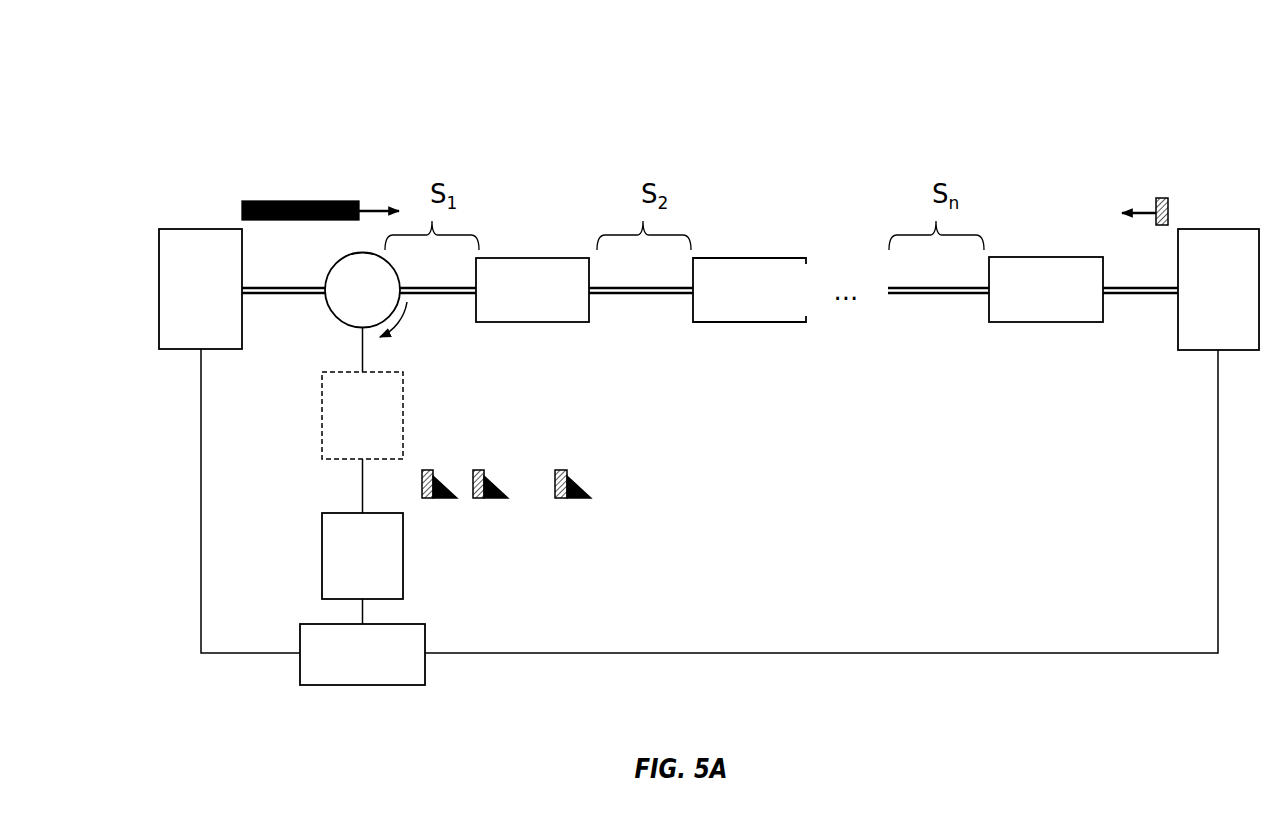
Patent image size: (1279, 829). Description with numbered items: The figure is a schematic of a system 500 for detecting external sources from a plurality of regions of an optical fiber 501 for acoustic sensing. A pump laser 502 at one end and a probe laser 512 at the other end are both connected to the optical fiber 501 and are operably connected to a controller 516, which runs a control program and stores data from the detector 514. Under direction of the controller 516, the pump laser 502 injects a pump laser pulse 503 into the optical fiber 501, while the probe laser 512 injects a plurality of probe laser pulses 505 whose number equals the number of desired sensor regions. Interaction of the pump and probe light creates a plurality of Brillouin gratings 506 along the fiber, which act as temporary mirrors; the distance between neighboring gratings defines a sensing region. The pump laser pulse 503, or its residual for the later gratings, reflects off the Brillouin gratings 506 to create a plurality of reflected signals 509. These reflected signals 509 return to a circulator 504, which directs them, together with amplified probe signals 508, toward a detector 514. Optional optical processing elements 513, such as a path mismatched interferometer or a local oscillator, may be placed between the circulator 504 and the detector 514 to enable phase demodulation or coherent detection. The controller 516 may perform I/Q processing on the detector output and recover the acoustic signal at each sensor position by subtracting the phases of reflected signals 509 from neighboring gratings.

The system 500 is at (123, 66).
The optical fiber 501 is at (295, 303).
The pump laser 502 is at (200, 289).
The pump laser pulse 503 is at (298, 195).
The circulator 504 is at (366, 295).
The probe laser pulses 505 is at (1163, 190).
The Brillouin gratings 506 is at (789, 289).
The amplified probe signals 508 is at (562, 504).
The reflected signals 509 is at (602, 448).
The probe laser 512 is at (1218, 289).
The optical processing elements 513 is at (362, 415).
The detector 514 is at (362, 556).
The controller 516 is at (362, 654).